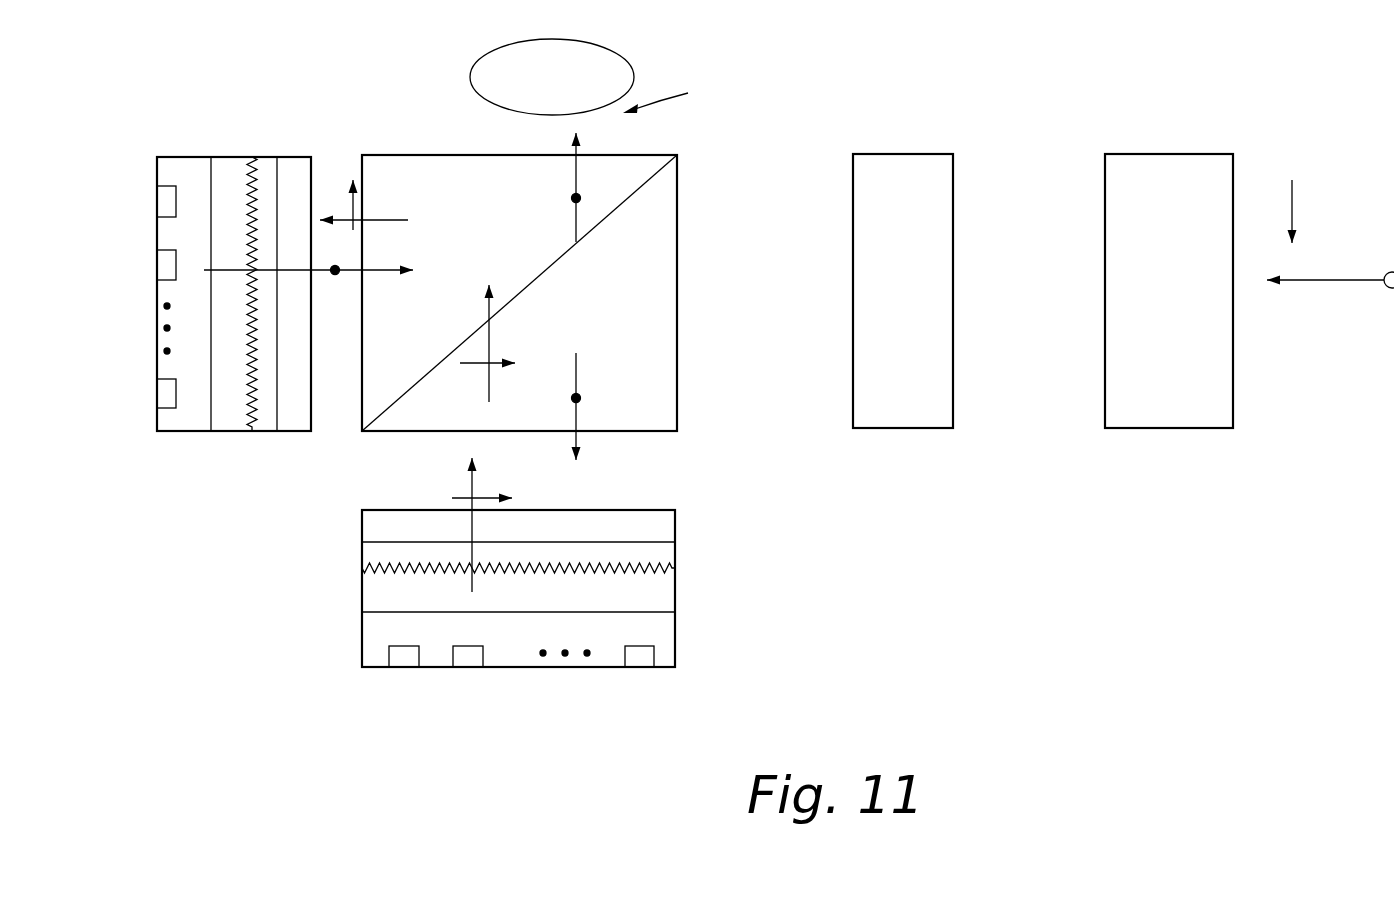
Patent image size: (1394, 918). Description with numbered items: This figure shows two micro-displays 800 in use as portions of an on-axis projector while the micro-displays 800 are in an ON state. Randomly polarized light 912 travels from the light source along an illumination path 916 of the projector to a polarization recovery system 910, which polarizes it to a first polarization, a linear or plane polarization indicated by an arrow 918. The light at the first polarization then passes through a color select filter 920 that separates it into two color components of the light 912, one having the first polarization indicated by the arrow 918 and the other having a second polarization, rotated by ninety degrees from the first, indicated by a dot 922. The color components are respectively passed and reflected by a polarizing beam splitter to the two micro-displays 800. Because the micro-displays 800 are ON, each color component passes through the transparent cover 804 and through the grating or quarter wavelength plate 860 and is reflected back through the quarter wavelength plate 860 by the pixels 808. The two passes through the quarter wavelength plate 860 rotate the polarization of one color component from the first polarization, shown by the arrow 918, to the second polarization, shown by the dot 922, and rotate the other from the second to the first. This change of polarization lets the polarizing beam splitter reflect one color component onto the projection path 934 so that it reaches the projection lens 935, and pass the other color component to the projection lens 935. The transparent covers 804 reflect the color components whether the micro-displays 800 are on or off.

The micro-display 800 is at (426, 407).
The transparent cover 804 is at (298, 155).
The pixels 808 is at (160, 265).
The grating (or quarter wavelength plate) 860 is at (252, 413).
The polarization recovery system 910 is at (1165, 153).
The randomly polarized light 912 is at (395, 215).
The illumination path 916 is at (1292, 197).
The arrow 918 is at (357, 205).
The color select filter 920 is at (918, 153).
The dot 922 is at (335, 275).
The projection path 934 is at (676, 91).
The projection lens 935 is at (620, 58).